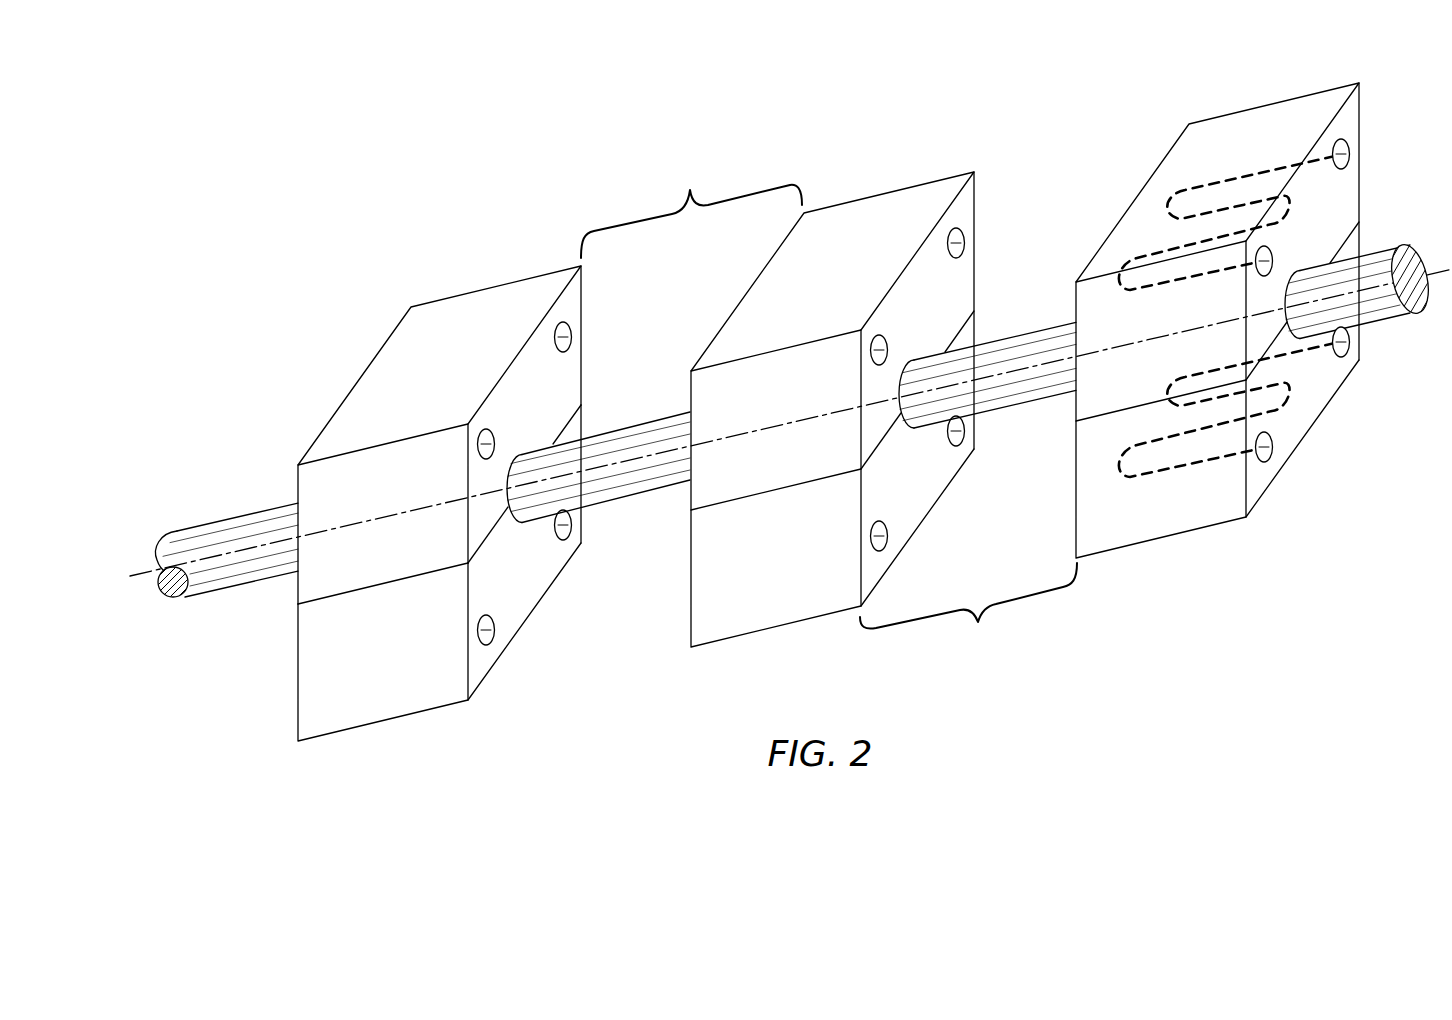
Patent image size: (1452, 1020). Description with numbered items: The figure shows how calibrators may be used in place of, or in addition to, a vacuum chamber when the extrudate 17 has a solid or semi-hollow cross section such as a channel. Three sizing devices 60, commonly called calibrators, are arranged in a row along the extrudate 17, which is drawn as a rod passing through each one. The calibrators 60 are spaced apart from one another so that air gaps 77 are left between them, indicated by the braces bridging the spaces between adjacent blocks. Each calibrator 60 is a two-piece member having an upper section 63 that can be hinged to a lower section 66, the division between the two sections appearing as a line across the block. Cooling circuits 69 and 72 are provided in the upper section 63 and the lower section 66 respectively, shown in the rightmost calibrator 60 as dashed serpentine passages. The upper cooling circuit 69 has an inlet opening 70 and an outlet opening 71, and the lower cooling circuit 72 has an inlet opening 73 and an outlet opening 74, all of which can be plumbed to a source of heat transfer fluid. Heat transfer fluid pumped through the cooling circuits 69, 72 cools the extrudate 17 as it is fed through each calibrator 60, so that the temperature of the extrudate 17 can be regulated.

The extrudate 17 is at (222, 540).
The sizing device 60 is at (828, 434).
The upper section 63 is at (572, 373).
The lower section 66 is at (526, 591).
The cooling circuit 69 is at (1230, 177).
The inlet opening 70 is at (1273, 258).
The outlet opening 71 is at (1350, 155).
The cooling circuit 72 is at (1192, 467).
The inlet opening 73 is at (1273, 448).
The outlet opening 74 is at (1350, 340).
The air gap 77 is at (829, 406).